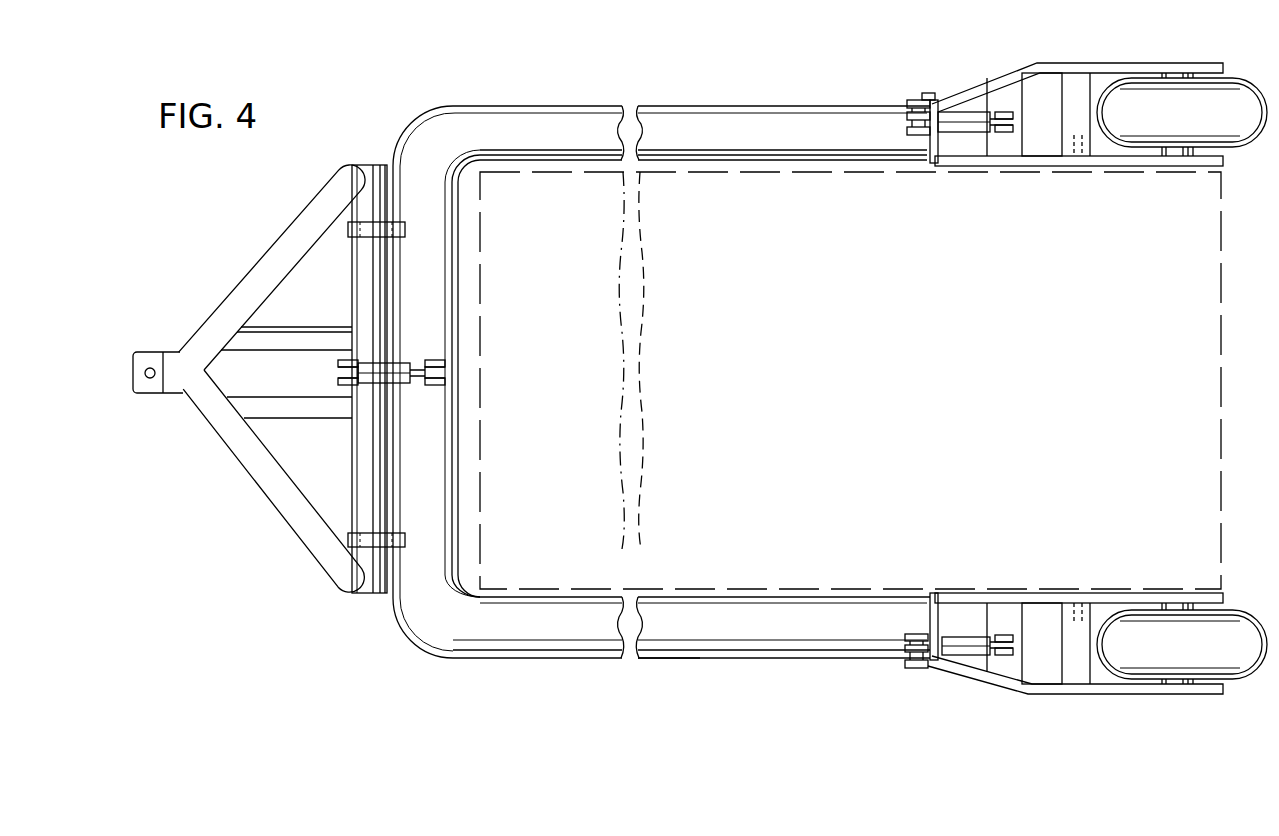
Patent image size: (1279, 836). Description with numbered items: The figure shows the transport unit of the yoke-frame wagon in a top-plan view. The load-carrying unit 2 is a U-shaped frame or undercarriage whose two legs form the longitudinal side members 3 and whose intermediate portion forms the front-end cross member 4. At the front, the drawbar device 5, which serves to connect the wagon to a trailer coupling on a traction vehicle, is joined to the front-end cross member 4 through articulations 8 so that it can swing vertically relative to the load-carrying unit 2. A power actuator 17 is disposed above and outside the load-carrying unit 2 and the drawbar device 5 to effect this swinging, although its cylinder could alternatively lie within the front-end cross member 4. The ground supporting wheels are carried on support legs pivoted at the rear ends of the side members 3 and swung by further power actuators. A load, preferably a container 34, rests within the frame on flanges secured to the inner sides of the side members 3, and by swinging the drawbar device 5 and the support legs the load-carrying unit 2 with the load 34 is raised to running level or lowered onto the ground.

The load-carrying unit 2 is at (760, 657).
The longitudinal side members 3 is at (716, 128).
The front-end cross member 4 is at (447, 432).
The drawbar device 5 is at (250, 287).
The articulations 8 is at (403, 555).
The power actuator 17 is at (405, 354).
The container 34 is at (1207, 302).